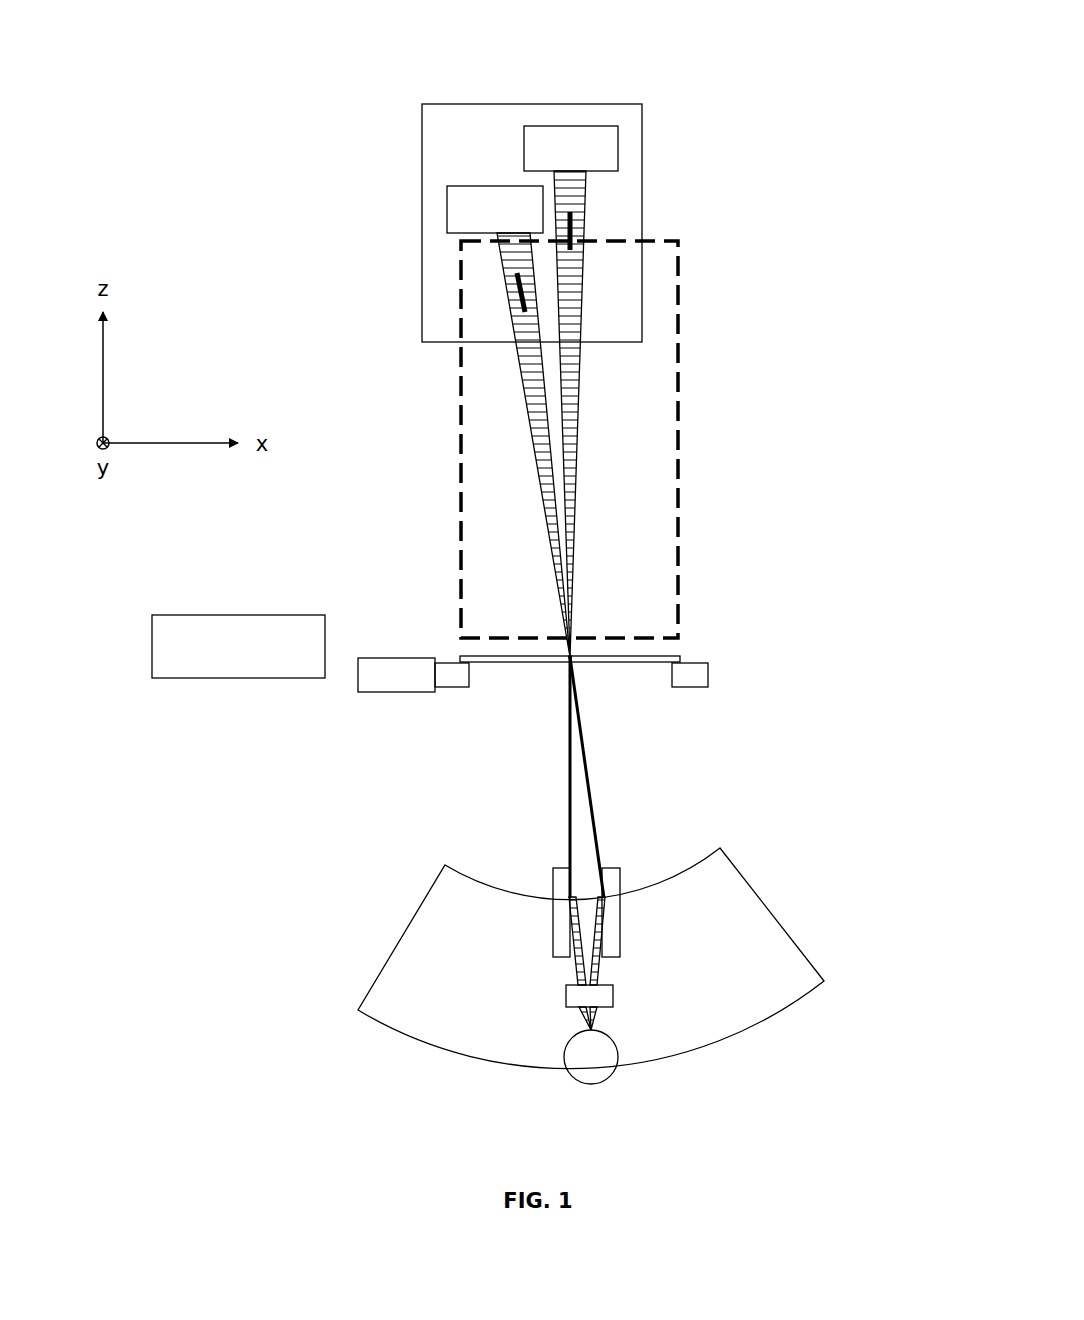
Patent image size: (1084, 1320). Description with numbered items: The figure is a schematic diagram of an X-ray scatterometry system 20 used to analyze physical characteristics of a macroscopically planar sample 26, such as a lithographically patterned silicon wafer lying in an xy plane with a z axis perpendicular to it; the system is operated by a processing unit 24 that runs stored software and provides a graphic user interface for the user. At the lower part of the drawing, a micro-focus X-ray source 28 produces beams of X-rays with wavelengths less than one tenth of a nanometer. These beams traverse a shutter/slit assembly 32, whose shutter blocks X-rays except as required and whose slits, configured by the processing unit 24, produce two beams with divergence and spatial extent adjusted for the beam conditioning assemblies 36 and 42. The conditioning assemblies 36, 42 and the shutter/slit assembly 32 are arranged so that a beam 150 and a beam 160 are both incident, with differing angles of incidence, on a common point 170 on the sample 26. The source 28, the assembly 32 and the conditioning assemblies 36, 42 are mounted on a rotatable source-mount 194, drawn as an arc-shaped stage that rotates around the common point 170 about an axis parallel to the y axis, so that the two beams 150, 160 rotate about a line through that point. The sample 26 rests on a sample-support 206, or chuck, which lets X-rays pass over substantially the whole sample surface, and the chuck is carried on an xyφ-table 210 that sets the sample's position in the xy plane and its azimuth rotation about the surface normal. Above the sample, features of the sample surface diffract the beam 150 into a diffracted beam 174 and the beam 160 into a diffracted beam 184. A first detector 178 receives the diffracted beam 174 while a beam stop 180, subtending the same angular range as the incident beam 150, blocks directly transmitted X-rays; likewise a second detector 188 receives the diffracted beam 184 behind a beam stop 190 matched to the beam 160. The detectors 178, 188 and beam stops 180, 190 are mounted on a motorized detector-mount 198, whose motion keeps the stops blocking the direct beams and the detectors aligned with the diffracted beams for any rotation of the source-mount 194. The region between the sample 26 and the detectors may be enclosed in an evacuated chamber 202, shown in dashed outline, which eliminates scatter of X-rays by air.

The X-ray scatterometry system 20 is at (770, 275).
The processing unit 24 is at (232, 615).
The sample 26 is at (466, 657).
The micro-focus X-ray source 28 is at (606, 1080).
The shutter/slit assembly 32 is at (566, 997).
The beam conditioning assembly 36 is at (553, 888).
The beam conditioning assembly 42 is at (620, 878).
The beam 150 is at (566, 795).
The beam 160 is at (590, 812).
The common point 170 is at (565, 664).
The diffracted beam 174 is at (578, 462).
The first detector 178 is at (612, 150).
The beam stop 180 is at (575, 232).
The diffracted beam 184 is at (524, 428).
The second detector 188 is at (447, 205).
The beam stop 190 is at (516, 296).
The rotatable source-mount 194 is at (731, 1040).
The motorized detector-mount 198 is at (462, 104).
The evacuated chamber 202 is at (678, 372).
The sample-support 206 is at (447, 688).
The xyφ-table 210 is at (378, 692).